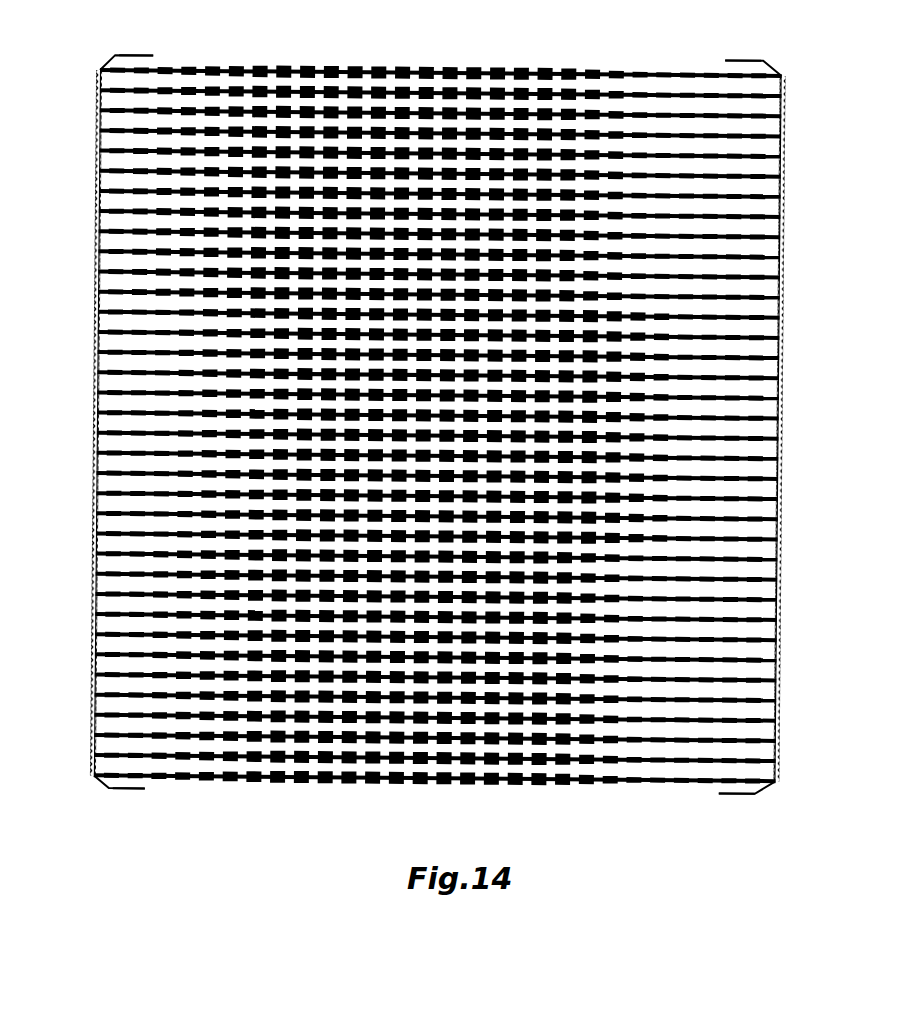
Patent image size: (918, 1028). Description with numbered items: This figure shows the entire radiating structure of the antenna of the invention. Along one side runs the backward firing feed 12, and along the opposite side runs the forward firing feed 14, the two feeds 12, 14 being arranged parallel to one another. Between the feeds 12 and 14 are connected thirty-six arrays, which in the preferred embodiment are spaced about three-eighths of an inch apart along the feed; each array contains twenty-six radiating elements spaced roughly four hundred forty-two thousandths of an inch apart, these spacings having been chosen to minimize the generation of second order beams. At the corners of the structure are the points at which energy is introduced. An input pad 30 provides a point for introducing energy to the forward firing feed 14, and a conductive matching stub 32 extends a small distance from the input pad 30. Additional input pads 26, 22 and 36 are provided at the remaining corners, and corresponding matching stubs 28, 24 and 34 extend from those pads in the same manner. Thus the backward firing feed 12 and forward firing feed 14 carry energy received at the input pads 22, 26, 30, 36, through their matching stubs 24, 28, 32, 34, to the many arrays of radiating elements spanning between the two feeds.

The backward firing feed 12 is at (97, 627).
The forward firing feed 14 is at (780, 254).
The input pad 22 is at (134, 789).
The matching stub 24 is at (149, 790).
The input pad 26 is at (139, 57).
The matching stub 28 is at (146, 57).
The input pad 30 is at (742, 61).
The matching stub 32 is at (729, 61).
The matching stub 34 is at (741, 795).
The input pad 36 is at (731, 795).